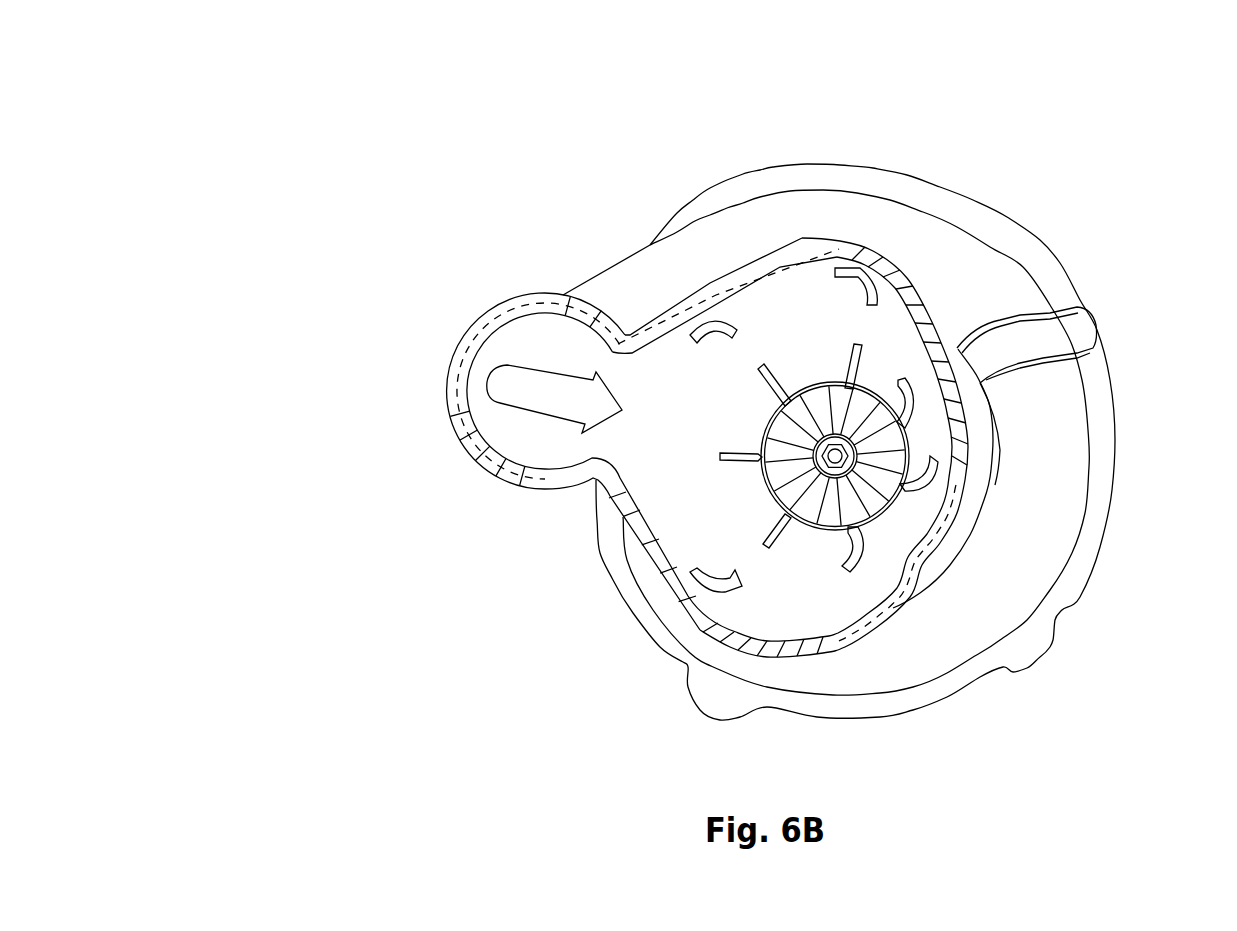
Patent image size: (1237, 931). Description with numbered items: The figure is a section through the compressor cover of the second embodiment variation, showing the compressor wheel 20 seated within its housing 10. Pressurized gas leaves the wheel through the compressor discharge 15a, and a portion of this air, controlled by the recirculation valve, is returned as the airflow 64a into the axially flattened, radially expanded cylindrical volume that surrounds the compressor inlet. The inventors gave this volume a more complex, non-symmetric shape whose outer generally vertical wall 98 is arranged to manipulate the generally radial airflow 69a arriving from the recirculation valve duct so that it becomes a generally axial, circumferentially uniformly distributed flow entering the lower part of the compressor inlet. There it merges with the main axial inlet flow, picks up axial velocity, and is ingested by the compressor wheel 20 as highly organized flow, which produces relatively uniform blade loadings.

The housing 10 is at (825, 207).
The compressor discharge 15a is at (572, 347).
The compressor wheel 20 is at (873, 430).
The airflow 64a is at (553, 397).
The generally radial airflow 69a is at (775, 528).
The outer generally vertical wall 98 is at (898, 585).